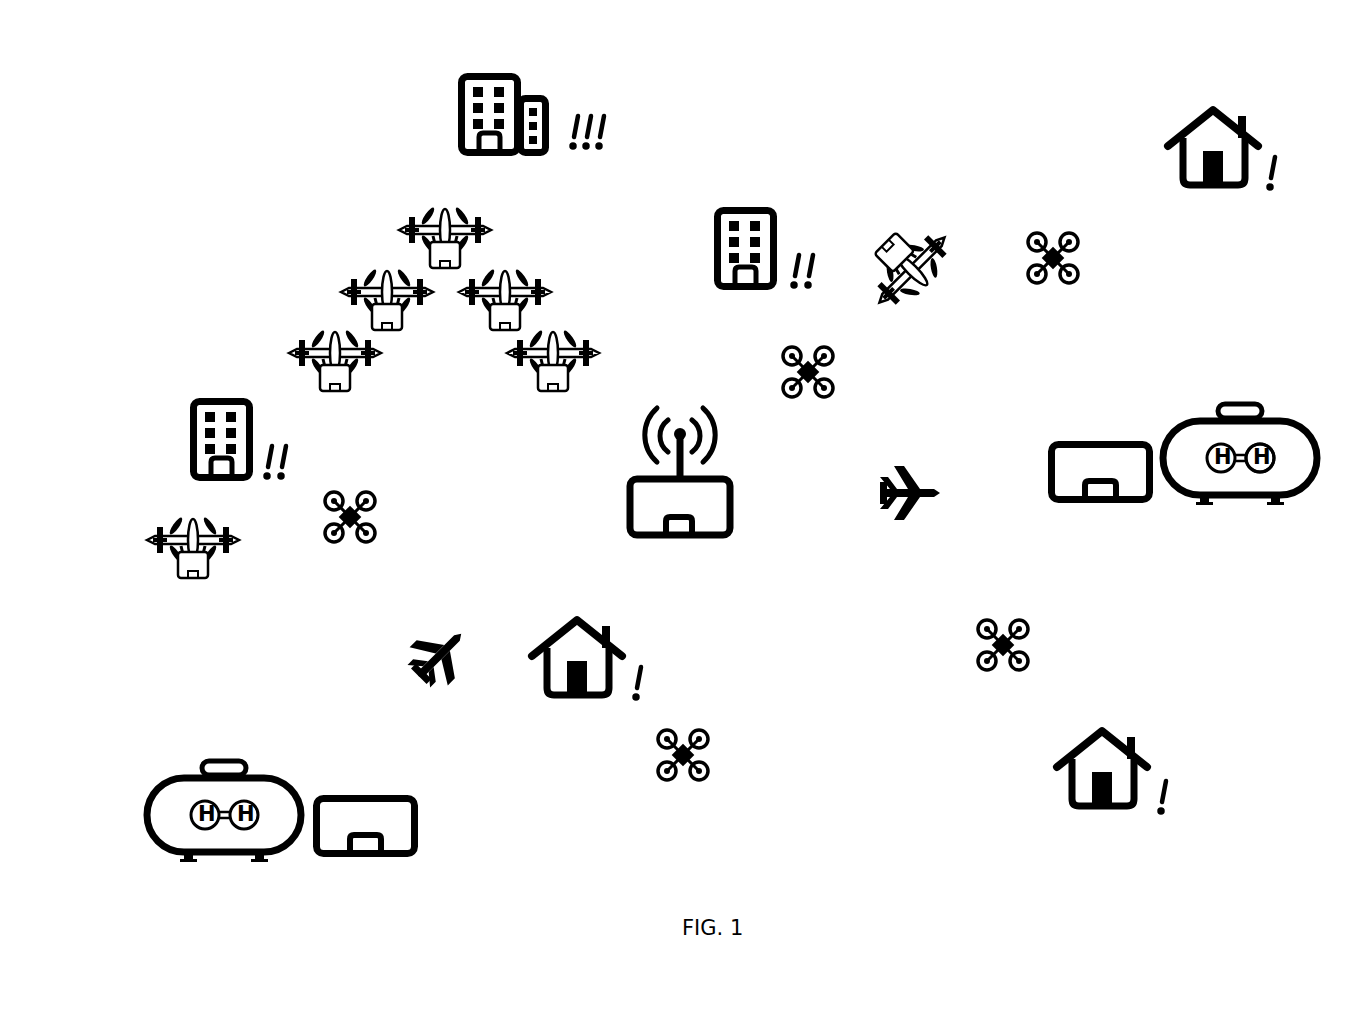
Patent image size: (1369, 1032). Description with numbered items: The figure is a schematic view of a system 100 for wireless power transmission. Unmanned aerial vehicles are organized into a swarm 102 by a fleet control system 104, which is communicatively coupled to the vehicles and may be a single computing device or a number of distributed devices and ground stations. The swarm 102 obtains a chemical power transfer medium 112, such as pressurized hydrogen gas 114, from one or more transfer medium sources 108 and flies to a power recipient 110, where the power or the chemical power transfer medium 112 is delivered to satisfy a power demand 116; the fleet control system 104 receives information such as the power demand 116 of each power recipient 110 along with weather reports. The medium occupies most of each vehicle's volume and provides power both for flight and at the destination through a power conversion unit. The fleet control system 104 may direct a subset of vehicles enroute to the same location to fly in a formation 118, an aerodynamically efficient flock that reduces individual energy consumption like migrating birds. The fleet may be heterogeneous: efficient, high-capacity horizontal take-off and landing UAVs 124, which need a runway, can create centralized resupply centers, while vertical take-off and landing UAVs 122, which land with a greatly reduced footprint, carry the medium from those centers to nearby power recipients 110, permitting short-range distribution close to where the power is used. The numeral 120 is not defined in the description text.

The system for wireless power transmission 100 is at (1085, 117).
The swarm 102 is at (220, 178).
The fleet control system 104 is at (732, 512).
The transfer medium source 108 is at (1100, 441).
The power recipient 110 is at (460, 95).
The chemical power transfer medium 112 is at (1246, 494).
The pressurized hydrogen gas 114 is at (1262, 448).
The power demand 116 is at (600, 135).
The formation 118 is at (445, 360).
The cargo UAV 120 is at (945, 247).
The vertical take-off and landing UAV 122 is at (378, 532).
The horizontal take-off and landing UAV 124 is at (910, 512).